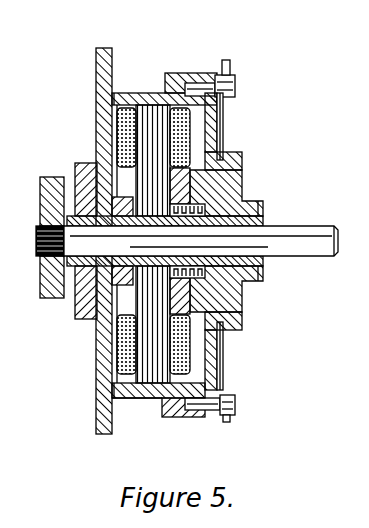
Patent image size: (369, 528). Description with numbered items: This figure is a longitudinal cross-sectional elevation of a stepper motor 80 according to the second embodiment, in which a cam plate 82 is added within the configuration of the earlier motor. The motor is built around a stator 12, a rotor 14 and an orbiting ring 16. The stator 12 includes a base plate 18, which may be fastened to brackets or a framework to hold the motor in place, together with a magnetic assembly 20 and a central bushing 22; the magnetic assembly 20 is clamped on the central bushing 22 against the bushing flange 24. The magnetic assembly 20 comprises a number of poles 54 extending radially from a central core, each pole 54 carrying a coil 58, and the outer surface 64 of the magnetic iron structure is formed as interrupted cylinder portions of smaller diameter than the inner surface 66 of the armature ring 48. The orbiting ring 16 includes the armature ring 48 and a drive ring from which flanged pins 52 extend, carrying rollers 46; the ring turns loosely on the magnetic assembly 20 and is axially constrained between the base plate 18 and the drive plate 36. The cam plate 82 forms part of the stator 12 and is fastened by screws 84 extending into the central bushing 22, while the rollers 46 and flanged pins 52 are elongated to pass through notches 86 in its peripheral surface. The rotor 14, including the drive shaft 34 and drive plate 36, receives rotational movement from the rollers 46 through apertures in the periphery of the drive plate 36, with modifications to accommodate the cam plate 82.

The stator 12 is at (91, 107).
The rotor 14 is at (306, 222).
The orbiting ring 16 is at (141, 404).
The base plate 18 is at (97, 77).
The magnetic assembly 20 is at (128, 173).
The central bushing 22 is at (110, 318).
The bushing flange 24 is at (183, 287).
The drive shaft 34 is at (286, 258).
The drive plate 36 is at (224, 365).
The rollers 46 is at (216, 75).
The armature ring 48 is at (143, 93).
The flanged pins 52 is at (235, 90).
The poles 54 is at (115, 92).
The coil 58 is at (125, 357).
The outer surface 64 is at (153, 397).
The inner surface 66 is at (125, 372).
The stepper motor 80 is at (262, 434).
The cam plate 82 is at (220, 134).
The screws 84 is at (238, 166).
The notches 86 is at (230, 64).